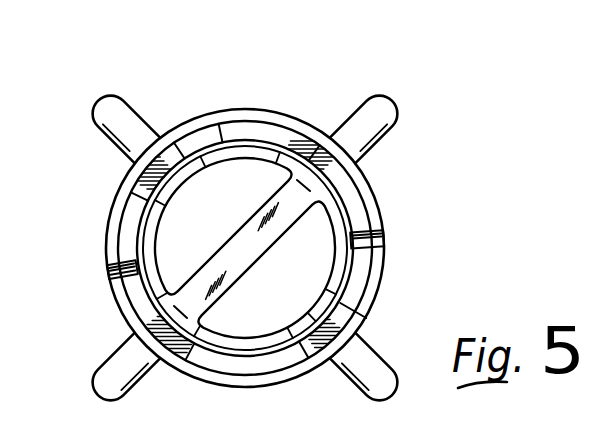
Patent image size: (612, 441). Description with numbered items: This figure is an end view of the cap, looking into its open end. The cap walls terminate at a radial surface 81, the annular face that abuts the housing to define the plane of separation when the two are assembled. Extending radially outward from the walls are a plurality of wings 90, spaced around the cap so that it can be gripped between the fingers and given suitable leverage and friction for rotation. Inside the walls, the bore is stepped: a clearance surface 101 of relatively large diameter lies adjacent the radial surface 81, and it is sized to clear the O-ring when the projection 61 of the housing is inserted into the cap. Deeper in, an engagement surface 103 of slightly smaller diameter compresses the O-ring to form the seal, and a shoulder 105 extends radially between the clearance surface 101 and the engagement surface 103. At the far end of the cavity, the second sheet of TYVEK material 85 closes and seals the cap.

The radial surface 81 is at (197, 137).
The wings 90 is at (363, 115).
The shoulder 105 is at (235, 137).
The clearance surface 101 is at (130, 212).
The second sheet of TYVEK material 85 is at (307, 275).
The engagement surface 103 is at (113, 267).
The projection 61 is at (576, 13).